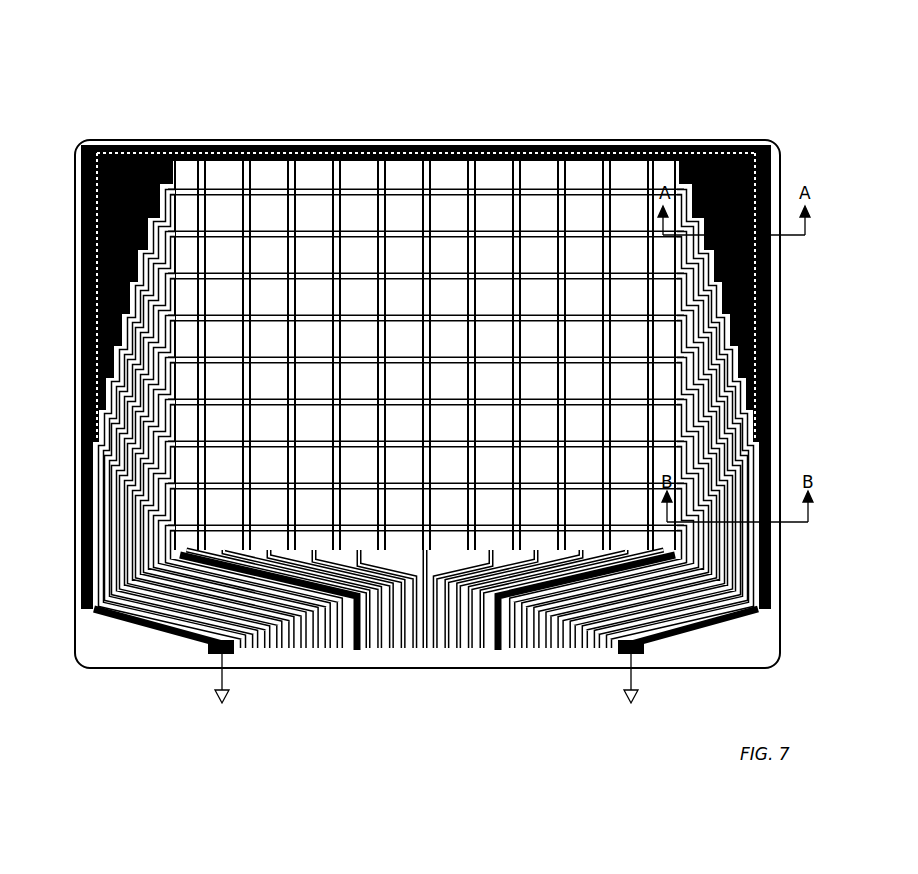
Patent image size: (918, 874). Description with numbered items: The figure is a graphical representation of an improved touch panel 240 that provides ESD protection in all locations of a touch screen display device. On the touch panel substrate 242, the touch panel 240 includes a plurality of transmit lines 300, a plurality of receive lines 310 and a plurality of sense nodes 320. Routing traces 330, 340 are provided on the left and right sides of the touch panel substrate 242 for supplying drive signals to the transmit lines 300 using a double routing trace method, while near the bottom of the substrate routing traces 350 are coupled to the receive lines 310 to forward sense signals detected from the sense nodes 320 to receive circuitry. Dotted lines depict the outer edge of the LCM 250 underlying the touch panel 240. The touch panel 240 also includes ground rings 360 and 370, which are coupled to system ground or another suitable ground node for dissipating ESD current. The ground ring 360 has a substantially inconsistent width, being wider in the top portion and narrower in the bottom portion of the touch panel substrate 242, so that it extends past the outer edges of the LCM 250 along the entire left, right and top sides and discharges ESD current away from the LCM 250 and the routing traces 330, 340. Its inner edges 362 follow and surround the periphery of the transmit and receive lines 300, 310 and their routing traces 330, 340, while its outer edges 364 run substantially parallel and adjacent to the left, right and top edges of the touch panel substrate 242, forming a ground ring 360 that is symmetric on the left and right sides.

The touch panel 240 is at (158, 52).
The touch panel substrate 242 is at (762, 653).
The LCM 250 is at (509, 146).
The transmit lines 300 is at (767, 300).
The receive lines 310 is at (335, 178).
The sense nodes 320 is at (470, 233).
The routing traces 330 is at (612, 653).
The routing traces 340 is at (340, 653).
The routing traces 350 is at (485, 653).
The ground ring 360 is at (188, 637).
The inner edges 362 is at (167, 177).
The outer edges 364 is at (78, 168).
The ground ring 370 is at (354, 653).